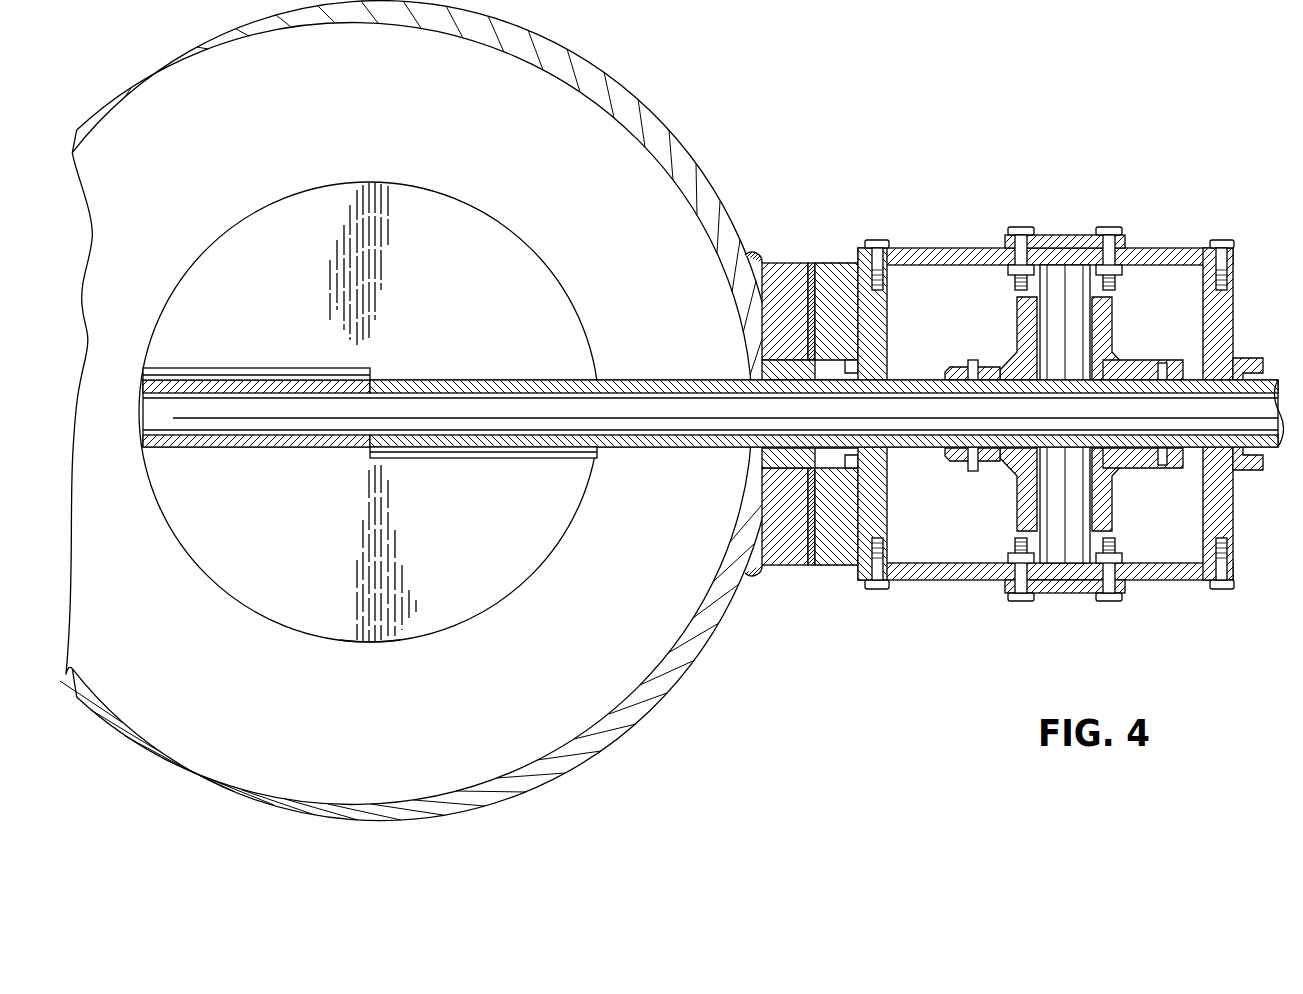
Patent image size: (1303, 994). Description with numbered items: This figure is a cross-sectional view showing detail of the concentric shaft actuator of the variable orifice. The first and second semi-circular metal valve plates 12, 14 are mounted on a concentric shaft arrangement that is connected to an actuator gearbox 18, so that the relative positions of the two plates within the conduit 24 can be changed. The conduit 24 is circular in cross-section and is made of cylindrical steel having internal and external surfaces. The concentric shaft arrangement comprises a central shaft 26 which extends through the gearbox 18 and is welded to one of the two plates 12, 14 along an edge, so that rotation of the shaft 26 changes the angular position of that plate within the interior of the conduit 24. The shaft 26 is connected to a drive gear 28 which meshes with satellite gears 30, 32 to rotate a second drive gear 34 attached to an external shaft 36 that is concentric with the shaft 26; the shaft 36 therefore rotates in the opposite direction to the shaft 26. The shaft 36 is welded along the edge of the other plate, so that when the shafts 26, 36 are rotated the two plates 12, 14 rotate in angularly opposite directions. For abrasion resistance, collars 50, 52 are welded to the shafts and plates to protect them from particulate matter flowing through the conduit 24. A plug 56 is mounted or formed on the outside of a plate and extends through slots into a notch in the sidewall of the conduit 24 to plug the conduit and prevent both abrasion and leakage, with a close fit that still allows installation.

The first semi-circular metal valve plate 12 is at (427, 194).
The second semi-circular metal valve plate 14 is at (388, 645).
The actuator gearbox 18 is at (958, 246).
The conduit 24 is at (667, 130).
The central shaft 26 is at (1270, 395).
The drive gear 28 is at (1138, 366).
The satellite gear 30 is at (1015, 322).
The satellite gear 32 is at (1112, 503).
The second drive gear 34 is at (965, 465).
The external shaft 36 is at (690, 450).
The collar 50 is at (245, 368).
The collar 52 is at (483, 460).
The plug 56 is at (757, 370).